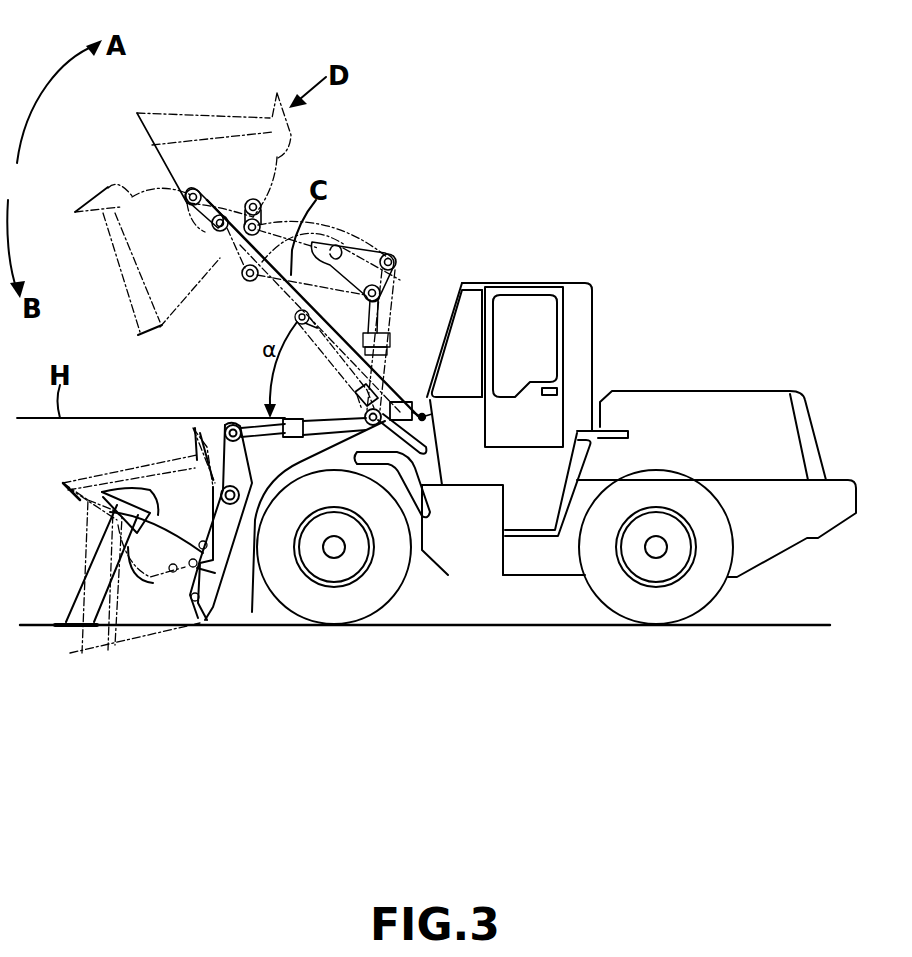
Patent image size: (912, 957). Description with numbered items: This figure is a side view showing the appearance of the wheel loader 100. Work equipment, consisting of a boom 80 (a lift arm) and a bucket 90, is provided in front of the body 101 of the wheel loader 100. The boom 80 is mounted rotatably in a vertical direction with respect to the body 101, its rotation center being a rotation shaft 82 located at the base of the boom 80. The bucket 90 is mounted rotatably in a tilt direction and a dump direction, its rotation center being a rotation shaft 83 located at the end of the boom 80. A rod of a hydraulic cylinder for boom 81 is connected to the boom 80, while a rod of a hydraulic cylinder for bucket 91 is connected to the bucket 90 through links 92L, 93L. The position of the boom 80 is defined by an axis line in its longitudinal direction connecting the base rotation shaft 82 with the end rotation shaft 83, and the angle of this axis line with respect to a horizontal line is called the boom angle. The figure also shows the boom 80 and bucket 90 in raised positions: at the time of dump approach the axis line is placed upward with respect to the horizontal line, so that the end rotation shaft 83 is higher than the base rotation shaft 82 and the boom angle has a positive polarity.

The wheel loader 100 is at (660, 88).
The body 101 is at (653, 420).
The boom 80 is at (233, 565).
The hydraulic cylinder for boom 81 is at (353, 387).
The rotation shaft 82 is at (422, 414).
The rotation shaft 83 is at (232, 238).
The bucket 90 is at (150, 553).
The hydraulic cylinder for bucket 91 is at (395, 287).
The link 92L is at (352, 248).
The link 93L is at (248, 280).